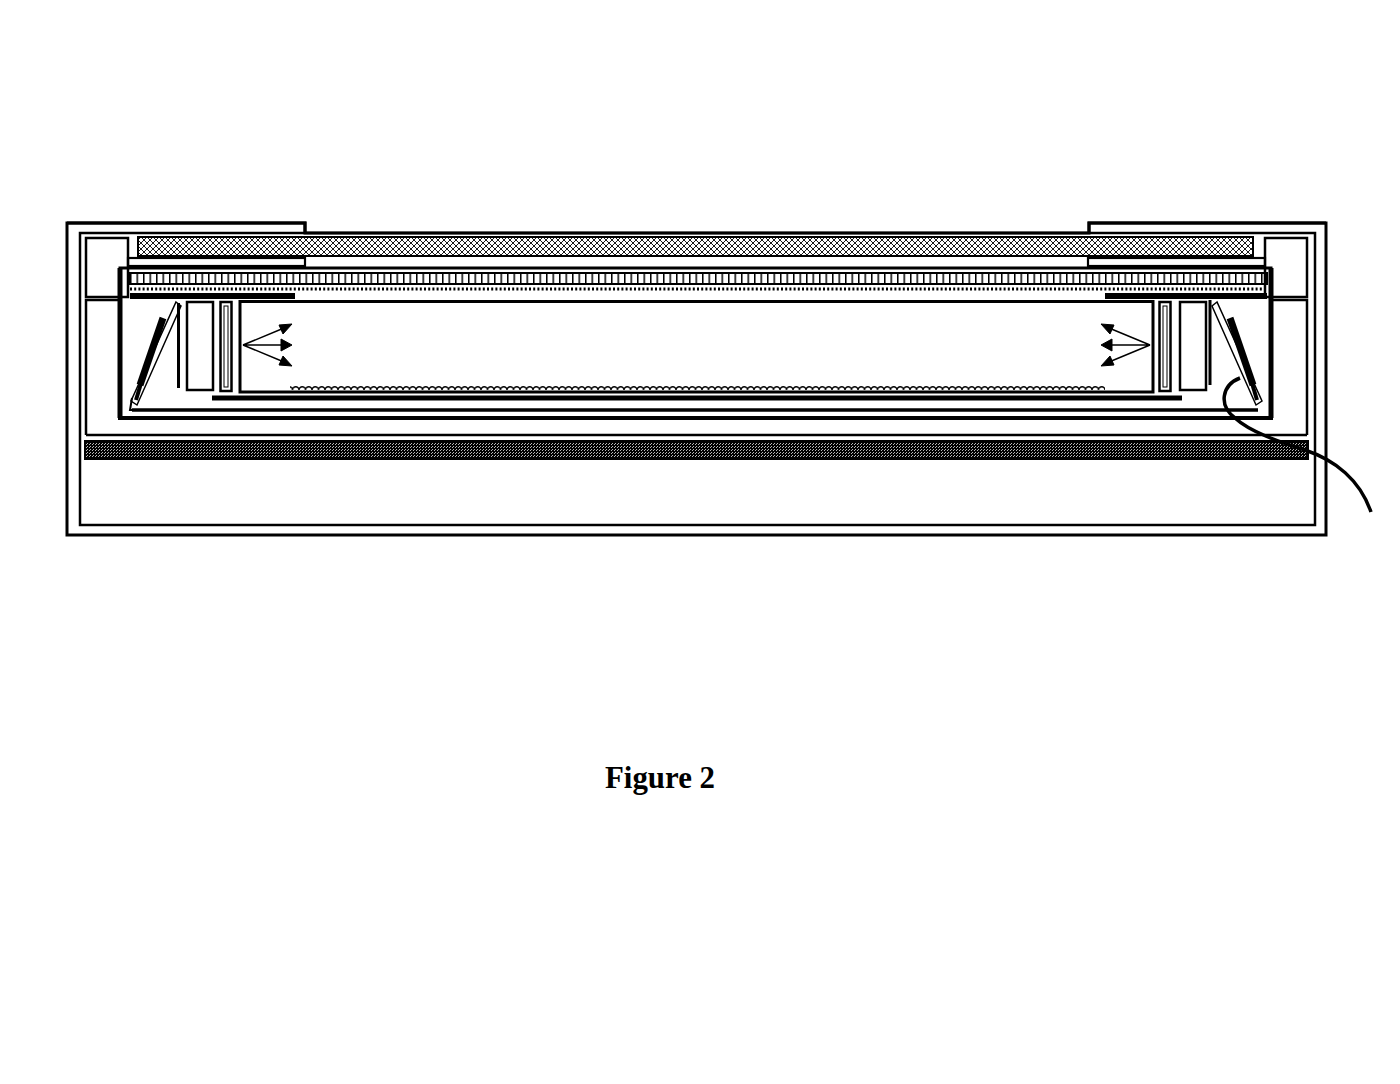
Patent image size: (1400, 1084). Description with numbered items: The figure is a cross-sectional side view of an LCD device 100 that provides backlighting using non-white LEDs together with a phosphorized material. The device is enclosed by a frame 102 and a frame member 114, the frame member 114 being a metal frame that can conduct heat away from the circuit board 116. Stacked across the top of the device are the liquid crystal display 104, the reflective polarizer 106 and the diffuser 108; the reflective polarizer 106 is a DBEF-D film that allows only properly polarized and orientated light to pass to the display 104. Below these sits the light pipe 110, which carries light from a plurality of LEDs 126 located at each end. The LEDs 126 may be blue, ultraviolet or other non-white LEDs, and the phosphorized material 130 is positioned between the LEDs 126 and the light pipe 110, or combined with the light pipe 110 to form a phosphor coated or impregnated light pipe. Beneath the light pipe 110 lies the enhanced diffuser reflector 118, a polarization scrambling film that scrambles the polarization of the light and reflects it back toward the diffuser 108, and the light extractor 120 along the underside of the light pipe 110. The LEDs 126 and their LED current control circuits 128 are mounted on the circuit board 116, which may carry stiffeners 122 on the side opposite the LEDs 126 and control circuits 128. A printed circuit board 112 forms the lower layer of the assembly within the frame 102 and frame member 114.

The LCD device 100 is at (1004, 157).
The frame 102 is at (198, 222).
The liquid crystal display 104 is at (352, 235).
The reflective polarizer 106 is at (473, 275).
The diffuser 108 is at (593, 288).
The light pipe 110 is at (755, 300).
The printed circuit board 112 is at (503, 460).
The frame member 114 is at (630, 438).
The circuit board 116 is at (813, 412).
The enhanced diffuser reflector 118 is at (923, 400).
The light extractor 120 is at (1053, 392).
The stiffeners 122 is at (1312, 468).
The LEDs 126 is at (203, 391).
The LED current control circuits 128 is at (1241, 348).
The phosphorized material 130 is at (226, 392).